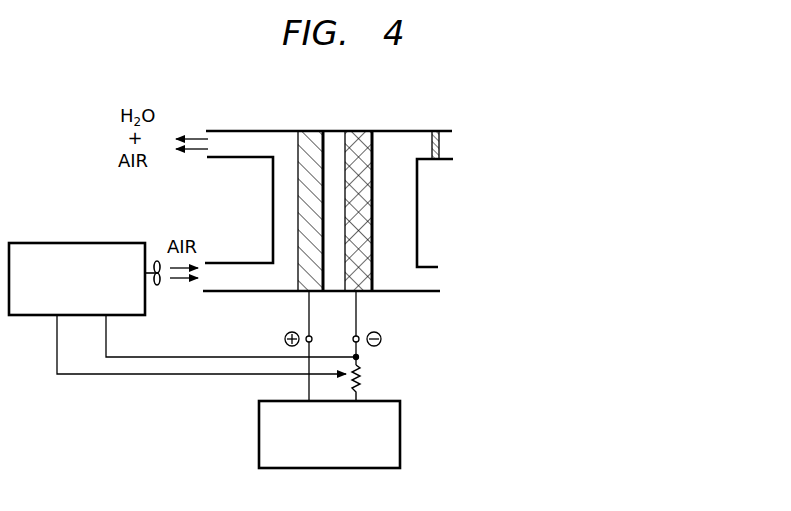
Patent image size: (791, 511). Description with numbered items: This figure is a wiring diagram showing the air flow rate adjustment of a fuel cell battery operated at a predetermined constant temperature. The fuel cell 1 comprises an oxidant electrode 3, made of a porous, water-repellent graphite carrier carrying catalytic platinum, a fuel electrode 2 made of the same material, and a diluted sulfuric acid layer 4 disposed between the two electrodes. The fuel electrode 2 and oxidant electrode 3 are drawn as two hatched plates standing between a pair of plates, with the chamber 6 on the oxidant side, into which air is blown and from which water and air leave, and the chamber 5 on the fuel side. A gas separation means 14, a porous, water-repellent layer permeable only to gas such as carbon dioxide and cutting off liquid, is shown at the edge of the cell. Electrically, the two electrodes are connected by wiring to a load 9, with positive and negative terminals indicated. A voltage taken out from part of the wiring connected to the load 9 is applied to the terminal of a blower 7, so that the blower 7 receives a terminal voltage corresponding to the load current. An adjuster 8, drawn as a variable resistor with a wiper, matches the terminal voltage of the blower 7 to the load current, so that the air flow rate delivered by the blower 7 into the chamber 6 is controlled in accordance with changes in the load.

The fuel cell 1 is at (471, 178).
The fuel electrode 2 is at (362, 140).
The oxidant electrode 3 is at (312, 141).
The diluted sulfuric acid layer 4 is at (337, 142).
The gas chamber 5 is at (394, 143).
The air chamber 6 is at (283, 140).
The blower 7 is at (98, 243).
The adjuster 8 is at (365, 379).
The load 9 is at (400, 432).
The gas separation means 14 is at (441, 136).